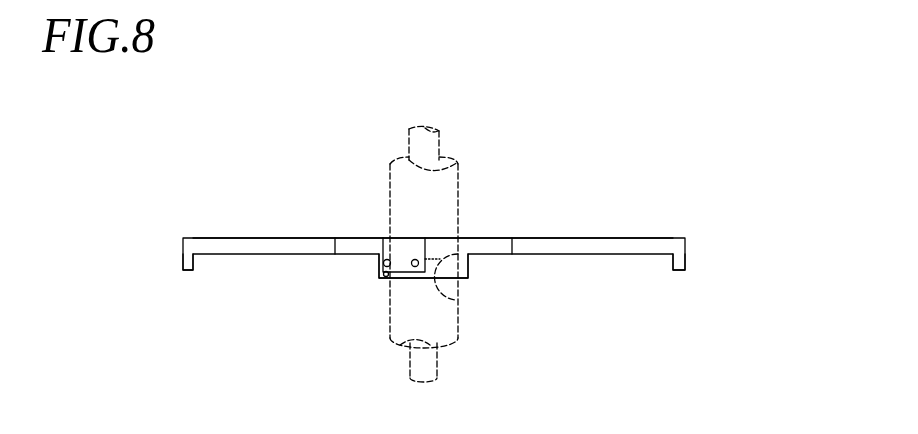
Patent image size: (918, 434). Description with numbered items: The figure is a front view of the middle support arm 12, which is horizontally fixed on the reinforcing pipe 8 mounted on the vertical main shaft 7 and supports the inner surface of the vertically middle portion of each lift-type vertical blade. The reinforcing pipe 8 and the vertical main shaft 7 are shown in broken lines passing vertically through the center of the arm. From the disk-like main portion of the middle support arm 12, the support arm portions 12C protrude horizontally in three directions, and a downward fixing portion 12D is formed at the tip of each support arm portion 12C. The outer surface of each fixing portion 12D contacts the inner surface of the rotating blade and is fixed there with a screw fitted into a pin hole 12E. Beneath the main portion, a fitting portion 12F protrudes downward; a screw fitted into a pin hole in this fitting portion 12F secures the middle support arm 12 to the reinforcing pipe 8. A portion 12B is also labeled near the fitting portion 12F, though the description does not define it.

The vertical main shaft 7 is at (408, 145).
The reinforcing pipe 8 is at (390, 196).
The middle support arm 12 is at (487, 222).
The spherical portion 12B is at (456, 298).
The support arm portion 12C is at (258, 238).
The fixing portion 12D is at (196, 268).
The pin hole 12E is at (380, 277).
The fitting portion 12F is at (467, 278).